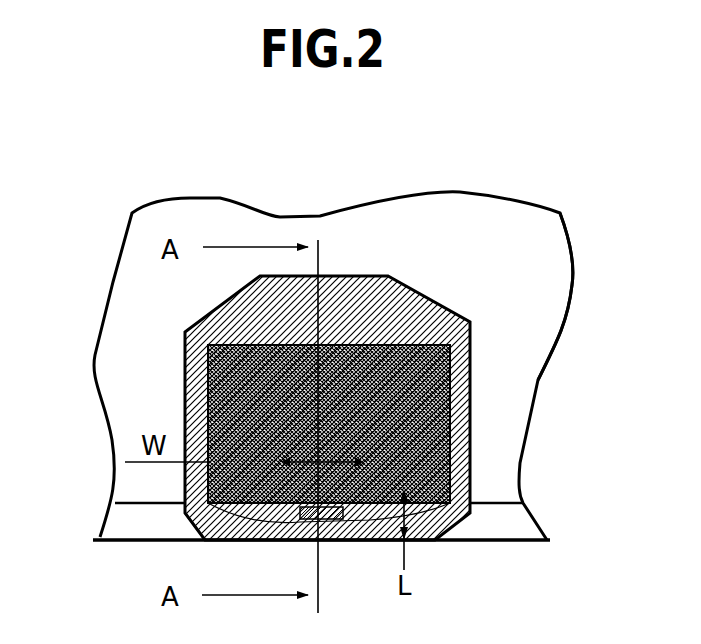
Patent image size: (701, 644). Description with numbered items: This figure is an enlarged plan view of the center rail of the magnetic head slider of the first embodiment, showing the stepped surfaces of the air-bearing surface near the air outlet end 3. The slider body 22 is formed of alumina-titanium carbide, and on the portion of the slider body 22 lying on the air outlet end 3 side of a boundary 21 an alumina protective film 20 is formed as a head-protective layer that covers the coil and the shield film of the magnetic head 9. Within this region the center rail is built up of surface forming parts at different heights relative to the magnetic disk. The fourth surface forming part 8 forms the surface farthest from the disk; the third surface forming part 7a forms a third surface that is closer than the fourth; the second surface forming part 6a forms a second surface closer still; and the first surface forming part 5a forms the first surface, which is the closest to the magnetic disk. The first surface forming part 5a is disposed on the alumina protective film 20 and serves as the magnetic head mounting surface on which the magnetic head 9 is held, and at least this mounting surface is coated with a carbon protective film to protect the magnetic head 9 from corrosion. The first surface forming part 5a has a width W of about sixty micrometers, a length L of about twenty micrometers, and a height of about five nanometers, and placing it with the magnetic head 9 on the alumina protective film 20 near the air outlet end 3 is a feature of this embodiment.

The air outlet end 3 is at (468, 541).
The first surface forming part 5a is at (198, 541).
The second surface forming part 6a is at (428, 432).
The third surface forming part 7a is at (183, 332).
The fourth surface forming part 8 is at (476, 266).
The magnetic head 9 is at (330, 543).
The alumina protective film 20 is at (518, 532).
The boundary 21 is at (528, 503).
The slider body 22 is at (567, 317).